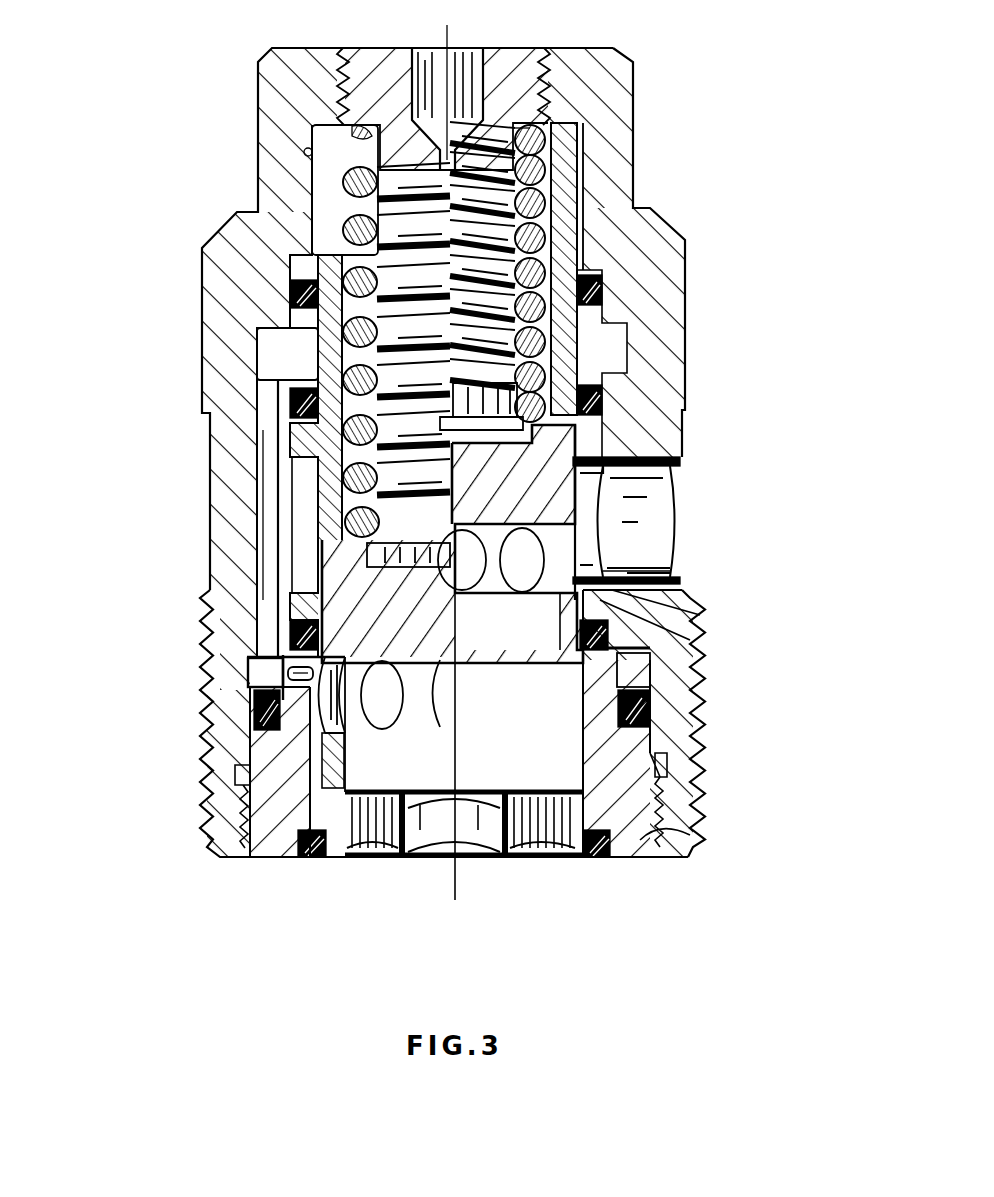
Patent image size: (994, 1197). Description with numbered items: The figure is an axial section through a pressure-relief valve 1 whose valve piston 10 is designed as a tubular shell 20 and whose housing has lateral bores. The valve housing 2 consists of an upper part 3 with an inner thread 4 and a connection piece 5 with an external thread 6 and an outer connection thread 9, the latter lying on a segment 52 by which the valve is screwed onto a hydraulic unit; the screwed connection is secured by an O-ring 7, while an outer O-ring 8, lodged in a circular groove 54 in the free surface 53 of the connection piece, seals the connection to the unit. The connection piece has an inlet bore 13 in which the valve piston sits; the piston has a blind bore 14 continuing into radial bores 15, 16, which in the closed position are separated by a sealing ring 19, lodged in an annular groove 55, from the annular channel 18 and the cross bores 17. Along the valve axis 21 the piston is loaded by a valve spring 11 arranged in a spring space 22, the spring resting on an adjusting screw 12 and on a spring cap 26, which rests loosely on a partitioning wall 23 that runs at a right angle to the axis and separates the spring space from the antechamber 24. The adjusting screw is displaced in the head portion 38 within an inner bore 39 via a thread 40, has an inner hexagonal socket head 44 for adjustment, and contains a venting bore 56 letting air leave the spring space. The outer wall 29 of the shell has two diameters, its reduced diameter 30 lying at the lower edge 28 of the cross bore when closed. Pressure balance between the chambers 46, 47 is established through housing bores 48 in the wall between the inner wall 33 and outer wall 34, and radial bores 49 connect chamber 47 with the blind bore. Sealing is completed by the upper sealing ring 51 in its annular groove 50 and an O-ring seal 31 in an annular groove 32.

The pressure-relief valve 1 is at (195, 537).
The valve housing 2 is at (222, 280).
The upper portion 3 is at (275, 190).
The inner thread 4 is at (265, 800).
The connection piece 5 is at (285, 822).
The external thread 6 is at (682, 835).
The O-ring 7 is at (280, 712).
The outer O-ring 8 is at (310, 862).
The external connection thread 9 is at (700, 730).
The valve piston 10 is at (560, 632).
The valve spring 11 is at (560, 395).
The adjusting screw 12 is at (490, 157).
The inlet bore 13 is at (435, 832).
The blind bore 14 is at (370, 772).
The radial bore 15 is at (382, 698).
The radial bore 16 is at (700, 605).
The cross bore 17 is at (642, 522).
The annular channel 18 is at (300, 487).
The sealing ring 19 is at (300, 618).
The tubular shell 20 is at (597, 277).
The valve axis 21 is at (458, 875).
The spring space 22 is at (580, 241).
The partitioning wall 23 is at (540, 477).
The antechamber 24 is at (498, 660).
The spring cap 26 is at (550, 420).
The lower edge 28 is at (665, 572).
The outer wall 29 is at (322, 462).
The reduced diameter 30 is at (605, 462).
The O-ring seal 31 is at (295, 272).
The annular groove 32 is at (288, 298).
The inner wall 33 is at (300, 152).
The outer wall 34 is at (255, 103).
The head portion 38 is at (620, 100).
The inner bore 39 is at (335, 70).
The thread 40 is at (585, 65).
The inner hexagonal socket head 44 is at (470, 50).
The chamber 46 is at (282, 343).
The chamber 47 is at (295, 662).
The housing bore 48 is at (270, 515).
The radial bore 49 is at (315, 680).
The annular groove 50 is at (595, 410).
The upper sealing ring 51 is at (285, 397).
The segment 52 is at (740, 790).
The free surface 53 is at (262, 860).
The circular groove 54 is at (595, 862).
The annular groove 55 is at (612, 637).
The venting bore 56 is at (532, 178).